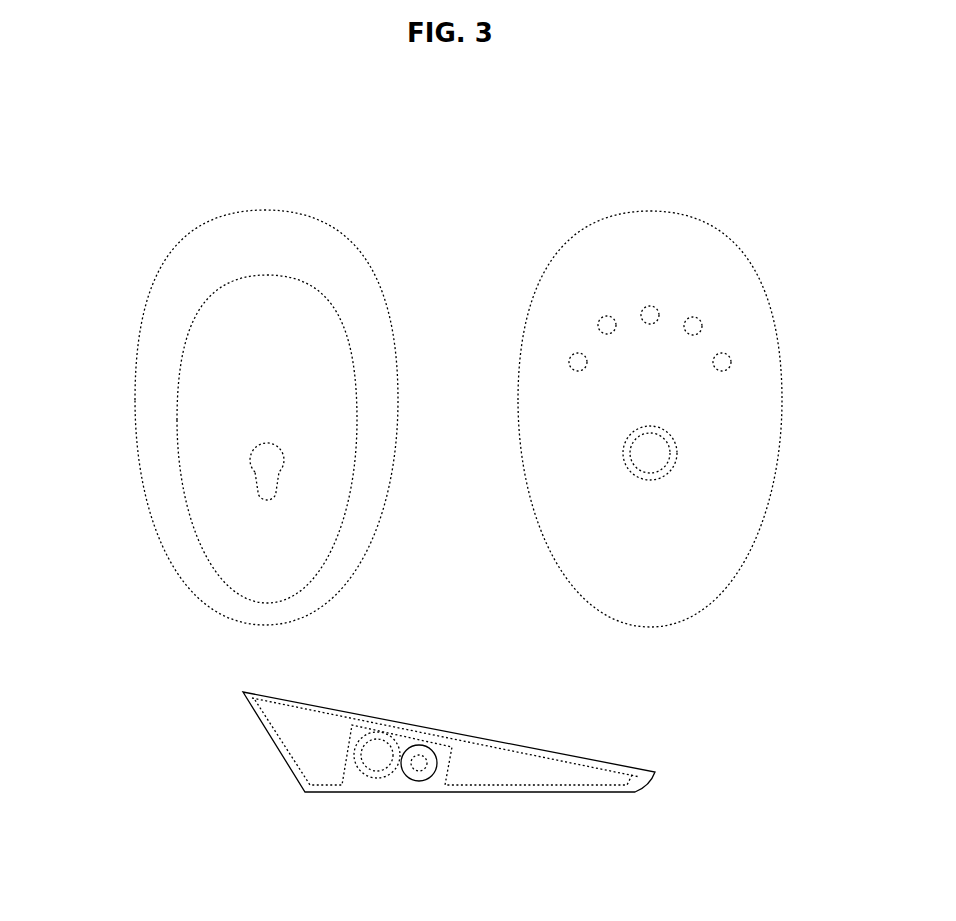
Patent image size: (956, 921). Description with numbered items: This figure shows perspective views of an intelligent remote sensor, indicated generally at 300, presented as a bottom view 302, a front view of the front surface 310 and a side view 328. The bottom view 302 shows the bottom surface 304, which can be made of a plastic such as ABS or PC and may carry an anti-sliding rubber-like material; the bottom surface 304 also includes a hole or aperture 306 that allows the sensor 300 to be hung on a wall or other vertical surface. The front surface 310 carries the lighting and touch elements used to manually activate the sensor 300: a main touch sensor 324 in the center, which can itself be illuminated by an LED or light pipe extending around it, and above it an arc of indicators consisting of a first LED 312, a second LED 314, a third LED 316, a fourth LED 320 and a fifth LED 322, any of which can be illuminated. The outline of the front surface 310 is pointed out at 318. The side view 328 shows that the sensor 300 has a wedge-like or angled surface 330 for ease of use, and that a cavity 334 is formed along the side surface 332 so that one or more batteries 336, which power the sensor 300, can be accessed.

The sensor 300 is at (235, 132).
The bottom view 302 is at (158, 253).
The bottom surface 304 is at (193, 402).
The hole or aperture 306 is at (245, 478).
The front surface 310 is at (675, 572).
The first LED 312 is at (568, 347).
The second LED 314 is at (598, 312).
The third LED 316 is at (643, 302).
The baffle plate outline 318 is at (670, 195).
The fourth LED 320 is at (702, 315).
The fifth LED 322 is at (740, 342).
The main touch sensor 324 is at (682, 449).
The side view 328 is at (192, 755).
The angled surface 330 is at (500, 727).
The side surface 332 is at (490, 767).
The cavity 334 is at (348, 788).
The batteries 336 is at (397, 777).